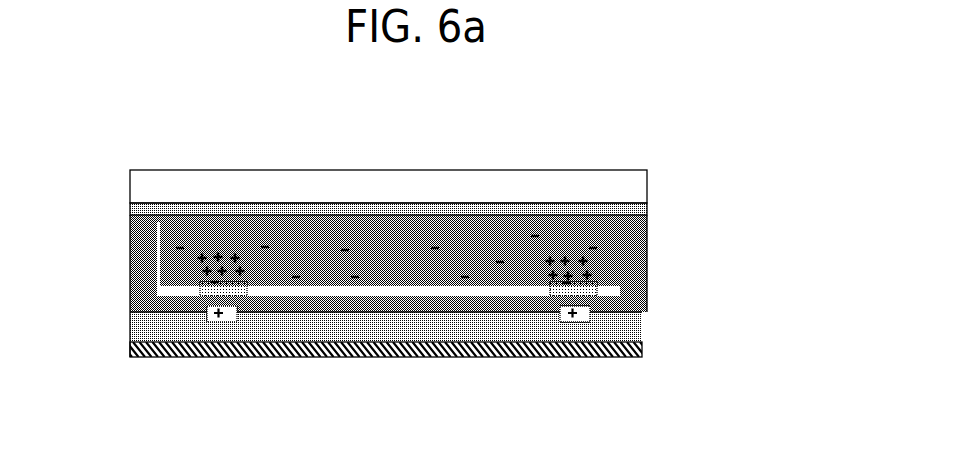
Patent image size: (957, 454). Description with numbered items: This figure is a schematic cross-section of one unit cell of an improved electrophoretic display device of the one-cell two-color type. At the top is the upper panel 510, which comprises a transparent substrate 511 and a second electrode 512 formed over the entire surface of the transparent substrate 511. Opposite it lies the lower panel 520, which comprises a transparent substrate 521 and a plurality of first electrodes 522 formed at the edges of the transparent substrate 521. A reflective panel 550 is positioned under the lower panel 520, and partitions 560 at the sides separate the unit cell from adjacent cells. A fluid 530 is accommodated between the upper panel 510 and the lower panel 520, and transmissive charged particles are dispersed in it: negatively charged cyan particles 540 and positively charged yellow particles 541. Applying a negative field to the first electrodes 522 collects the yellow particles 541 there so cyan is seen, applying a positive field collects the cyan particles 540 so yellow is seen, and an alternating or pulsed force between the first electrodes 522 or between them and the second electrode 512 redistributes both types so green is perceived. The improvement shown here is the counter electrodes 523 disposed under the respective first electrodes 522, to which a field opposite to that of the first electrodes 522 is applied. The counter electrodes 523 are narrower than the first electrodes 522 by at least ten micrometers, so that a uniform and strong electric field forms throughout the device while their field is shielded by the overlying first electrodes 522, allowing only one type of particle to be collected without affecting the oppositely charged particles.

The upper panel 510 is at (478, 201).
The transparent substrate 511 is at (645, 183).
The second electrode 512 is at (640, 210).
The lower panel 520 is at (476, 342).
The transparent substrate 521 is at (640, 328).
The first electrodes 522 is at (592, 291).
The counter electrodes 523 is at (172, 318).
The fluid 530 is at (200, 226).
The transmissive charged particles 540 is at (436, 246).
The yellow particles 541 is at (593, 261).
The reflective panel 550 is at (627, 344).
The partitions 560 is at (142, 270).